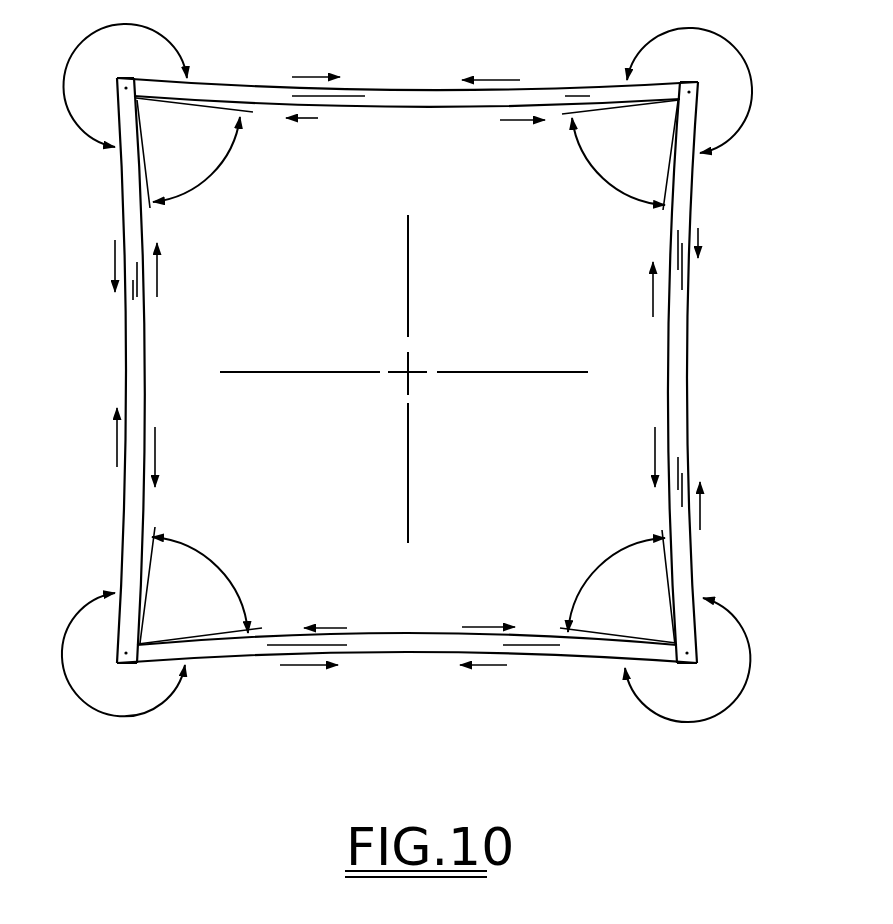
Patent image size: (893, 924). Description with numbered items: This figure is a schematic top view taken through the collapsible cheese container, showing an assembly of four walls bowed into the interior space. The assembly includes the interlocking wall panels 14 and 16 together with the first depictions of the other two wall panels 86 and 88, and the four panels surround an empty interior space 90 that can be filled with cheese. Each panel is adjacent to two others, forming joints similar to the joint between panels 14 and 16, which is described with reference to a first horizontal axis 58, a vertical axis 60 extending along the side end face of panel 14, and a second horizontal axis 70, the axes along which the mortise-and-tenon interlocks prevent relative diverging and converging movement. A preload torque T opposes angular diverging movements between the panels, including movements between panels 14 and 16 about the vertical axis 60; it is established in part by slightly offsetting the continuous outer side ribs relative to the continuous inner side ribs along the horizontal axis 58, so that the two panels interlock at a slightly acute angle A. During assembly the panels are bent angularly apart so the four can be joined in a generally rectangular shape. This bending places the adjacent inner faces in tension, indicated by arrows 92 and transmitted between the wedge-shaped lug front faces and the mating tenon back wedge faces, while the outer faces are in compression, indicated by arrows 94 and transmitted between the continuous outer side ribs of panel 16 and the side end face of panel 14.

The wall panel 14 is at (397, 652).
The wall panel 16 is at (681, 346).
The first horizontal axis 58 is at (473, 371).
The vertical axis 60 is at (697, 652).
The second horizontal axis 70 is at (409, 248).
The wall panel 86 is at (424, 98).
The wall panel 88 is at (140, 343).
The interior space 90 is at (312, 262).
The arrows indicating tension 92 is at (285, 119).
The arrows indicating compression 94 is at (292, 77).
The preload torque T is at (90, 42).
The acute angle A is at (211, 176).